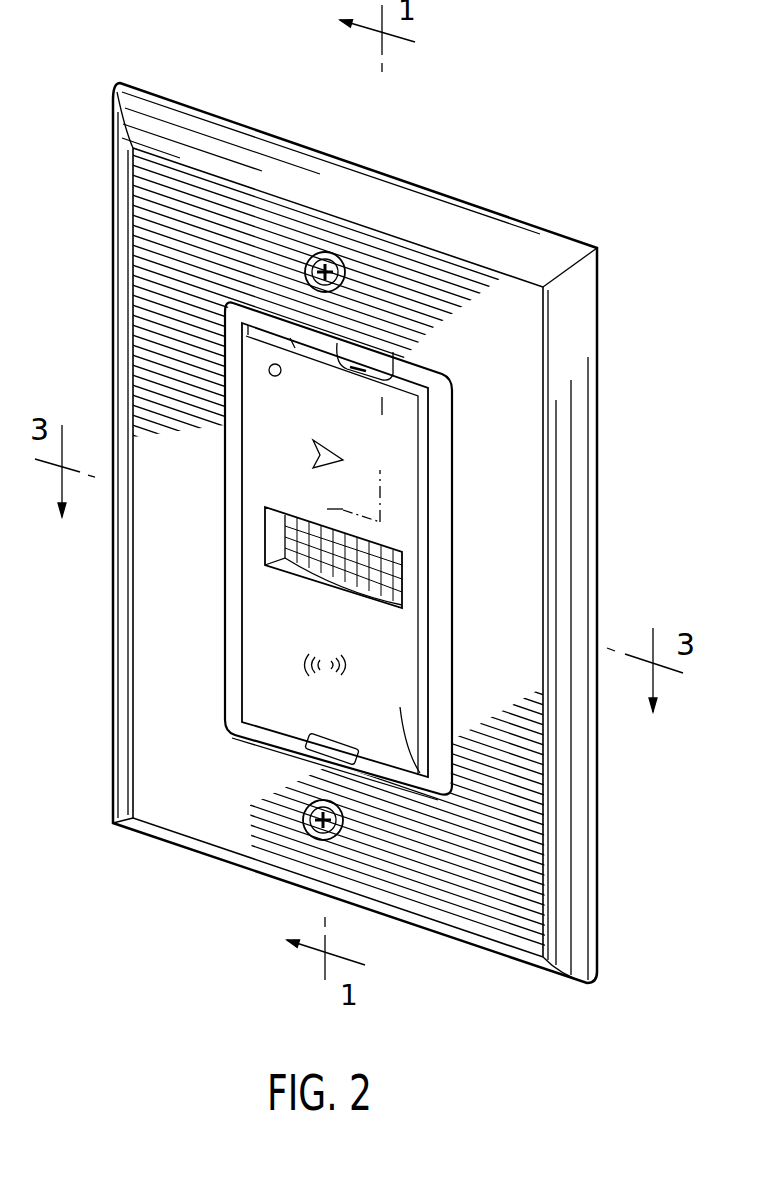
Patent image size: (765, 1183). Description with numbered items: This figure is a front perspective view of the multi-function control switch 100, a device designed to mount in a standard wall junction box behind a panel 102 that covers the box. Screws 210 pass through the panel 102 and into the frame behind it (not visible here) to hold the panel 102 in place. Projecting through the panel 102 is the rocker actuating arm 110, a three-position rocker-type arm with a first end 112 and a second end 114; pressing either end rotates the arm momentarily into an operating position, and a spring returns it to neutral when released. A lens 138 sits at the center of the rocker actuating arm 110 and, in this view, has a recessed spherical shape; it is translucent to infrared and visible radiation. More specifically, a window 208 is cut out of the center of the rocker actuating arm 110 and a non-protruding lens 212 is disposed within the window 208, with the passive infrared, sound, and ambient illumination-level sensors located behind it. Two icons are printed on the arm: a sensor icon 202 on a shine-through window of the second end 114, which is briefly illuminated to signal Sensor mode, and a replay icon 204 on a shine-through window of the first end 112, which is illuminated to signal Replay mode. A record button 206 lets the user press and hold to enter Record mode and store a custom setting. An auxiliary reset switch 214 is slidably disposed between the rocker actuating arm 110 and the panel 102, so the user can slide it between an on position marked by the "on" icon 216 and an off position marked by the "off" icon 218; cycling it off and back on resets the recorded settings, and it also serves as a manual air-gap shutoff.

The multi-function control switch 100 is at (600, 890).
The panel 102 is at (578, 315).
The rocker actuating arm 110 is at (455, 787).
The first end 112 is at (280, 712).
The second end 114 is at (272, 427).
The lens 138 is at (288, 565).
The sensor icon 202 is at (303, 664).
The replay icon 204 is at (318, 456).
The record button 206 is at (363, 769).
The window 208 is at (404, 579).
The screws 210 is at (317, 256).
The non-protruding lens 212 is at (404, 551).
The auxiliary reset switch 214 is at (366, 352).
The "on" icon 216 is at (268, 372).
The "off" icon 218 is at (383, 407).